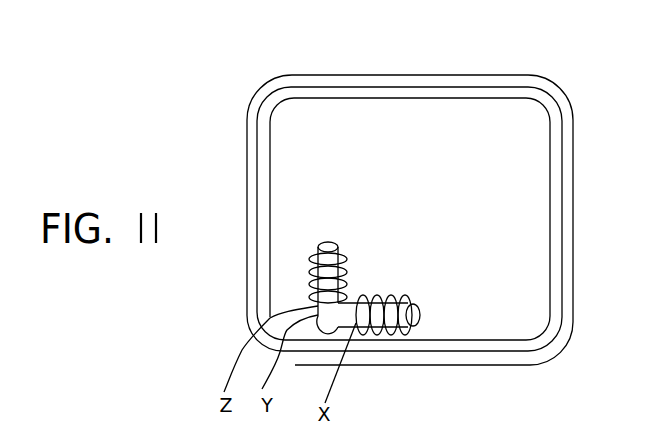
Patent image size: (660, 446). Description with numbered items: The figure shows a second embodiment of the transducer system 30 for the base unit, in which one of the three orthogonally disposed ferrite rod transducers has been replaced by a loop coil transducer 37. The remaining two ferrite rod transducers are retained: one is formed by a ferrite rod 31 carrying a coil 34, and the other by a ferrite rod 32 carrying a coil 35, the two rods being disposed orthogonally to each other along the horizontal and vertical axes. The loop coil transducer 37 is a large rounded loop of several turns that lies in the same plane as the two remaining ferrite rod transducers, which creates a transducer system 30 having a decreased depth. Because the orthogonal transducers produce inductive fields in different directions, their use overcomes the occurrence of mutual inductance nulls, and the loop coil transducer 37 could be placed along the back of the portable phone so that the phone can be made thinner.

The transducer system 30 is at (574, 61).
The ferrite rod 31 is at (421, 316).
The ferrite rod 32 is at (326, 246).
The coil 34 is at (392, 298).
The coil 35 is at (341, 258).
The loop coil transducer 37 is at (420, 366).